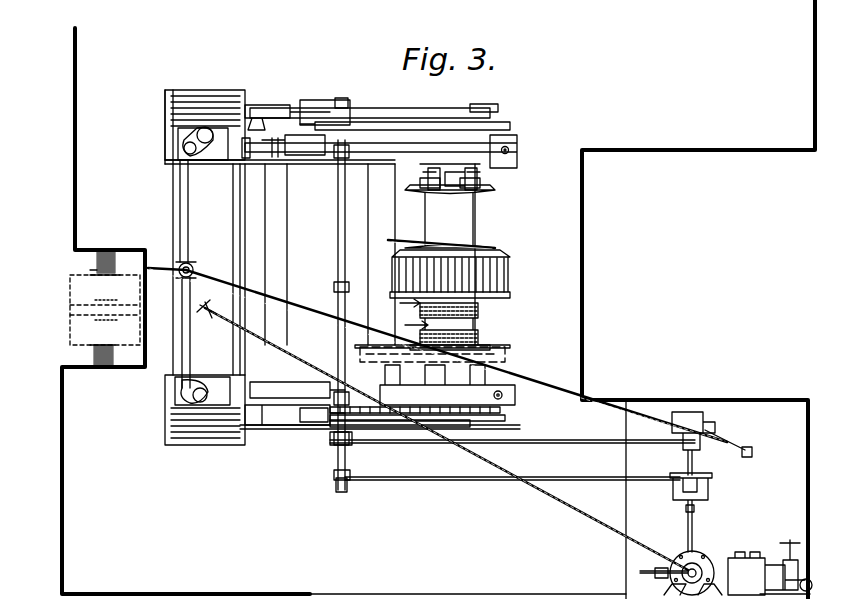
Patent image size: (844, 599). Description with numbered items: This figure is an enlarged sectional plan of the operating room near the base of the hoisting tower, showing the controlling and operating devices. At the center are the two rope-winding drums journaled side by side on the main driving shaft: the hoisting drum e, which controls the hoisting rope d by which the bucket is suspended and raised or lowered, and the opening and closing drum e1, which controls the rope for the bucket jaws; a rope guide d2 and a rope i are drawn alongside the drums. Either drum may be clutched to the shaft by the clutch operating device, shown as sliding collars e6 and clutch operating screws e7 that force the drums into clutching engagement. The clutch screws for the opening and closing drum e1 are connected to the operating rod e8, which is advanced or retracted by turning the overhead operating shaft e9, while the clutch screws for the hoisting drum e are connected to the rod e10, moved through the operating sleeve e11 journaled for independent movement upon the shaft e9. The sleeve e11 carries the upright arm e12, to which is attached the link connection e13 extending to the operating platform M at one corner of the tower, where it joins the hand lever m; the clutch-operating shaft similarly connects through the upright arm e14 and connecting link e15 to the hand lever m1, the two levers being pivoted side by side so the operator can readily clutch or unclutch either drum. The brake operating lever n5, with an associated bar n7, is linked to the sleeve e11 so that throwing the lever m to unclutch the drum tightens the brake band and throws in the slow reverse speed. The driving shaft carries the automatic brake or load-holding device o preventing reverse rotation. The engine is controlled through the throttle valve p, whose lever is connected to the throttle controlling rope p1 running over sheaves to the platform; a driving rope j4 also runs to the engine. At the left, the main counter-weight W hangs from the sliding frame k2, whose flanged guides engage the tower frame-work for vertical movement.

The sliding frame k2 is at (58, 385).
The main counter-weight W is at (92, 345).
The throttle valve p is at (194, 266).
The throttle controlling rope p1 is at (538, 386).
The operating rod e8 is at (380, 143).
The overhead operating shaft e9 is at (337, 211).
The clutch operating screws e7 is at (428, 170).
The sliding collars e6 is at (482, 183).
The opening and closing drum e1 is at (472, 222).
The rope guide d2 is at (434, 226).
The hoisting drum e is at (480, 318).
The hoisting rope d is at (400, 302).
The rope i is at (405, 326).
The brake operating lever n5 is at (358, 347).
The bar n7 is at (340, 332).
The automatic brake or load-holding device o is at (500, 412).
The operating sleeve e11 is at (332, 372).
The link connection e13 is at (530, 446).
The connecting link e15 is at (546, 484).
The upright arm e12 is at (350, 446).
The rod e10 is at (406, 425).
The upright arm e14 is at (347, 485).
The driving rope j4 is at (585, 514).
The hand lever m is at (698, 445).
The hand lever m1 is at (706, 490).
The operating platform M is at (726, 528).